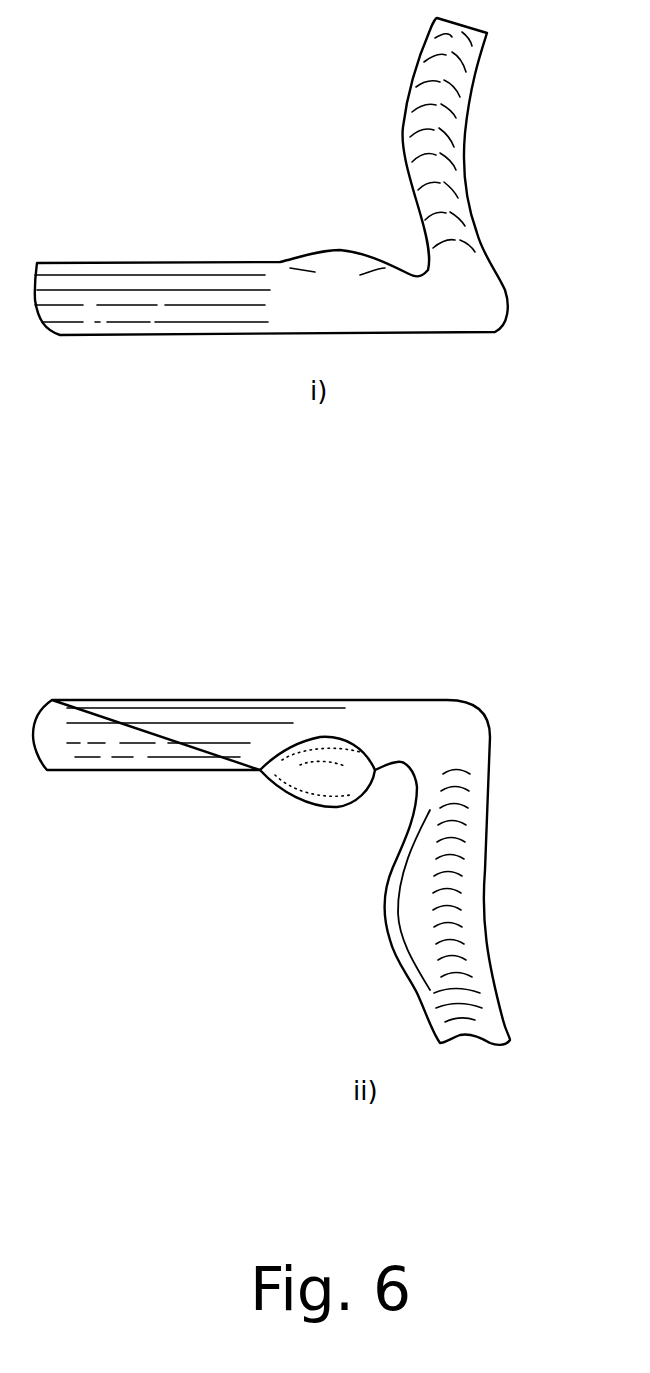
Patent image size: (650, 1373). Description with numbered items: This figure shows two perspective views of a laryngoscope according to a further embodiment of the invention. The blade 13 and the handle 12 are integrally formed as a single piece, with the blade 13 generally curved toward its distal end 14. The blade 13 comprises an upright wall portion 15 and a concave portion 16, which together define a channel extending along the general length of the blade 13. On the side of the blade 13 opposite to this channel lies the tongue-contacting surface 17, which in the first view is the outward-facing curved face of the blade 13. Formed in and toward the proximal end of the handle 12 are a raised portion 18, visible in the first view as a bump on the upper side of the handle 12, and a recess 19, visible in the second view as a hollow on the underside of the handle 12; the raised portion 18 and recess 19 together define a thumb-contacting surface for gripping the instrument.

The handle 12 is at (143, 723).
The blade 13 is at (443, 153).
The distal end 14 is at (470, 1030).
The upright wall portion 15 is at (383, 923).
The concave portion 16 is at (460, 910).
The tongue-contacting surface 17 is at (427, 68).
The raised portion 18 is at (323, 250).
The recess 19 is at (310, 780).